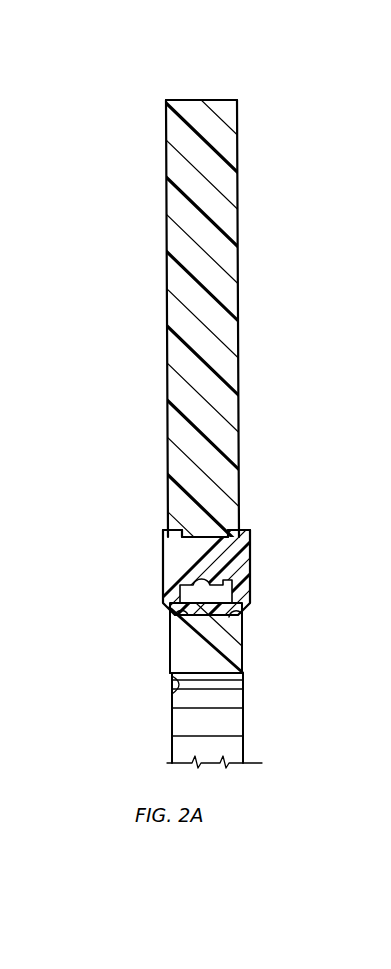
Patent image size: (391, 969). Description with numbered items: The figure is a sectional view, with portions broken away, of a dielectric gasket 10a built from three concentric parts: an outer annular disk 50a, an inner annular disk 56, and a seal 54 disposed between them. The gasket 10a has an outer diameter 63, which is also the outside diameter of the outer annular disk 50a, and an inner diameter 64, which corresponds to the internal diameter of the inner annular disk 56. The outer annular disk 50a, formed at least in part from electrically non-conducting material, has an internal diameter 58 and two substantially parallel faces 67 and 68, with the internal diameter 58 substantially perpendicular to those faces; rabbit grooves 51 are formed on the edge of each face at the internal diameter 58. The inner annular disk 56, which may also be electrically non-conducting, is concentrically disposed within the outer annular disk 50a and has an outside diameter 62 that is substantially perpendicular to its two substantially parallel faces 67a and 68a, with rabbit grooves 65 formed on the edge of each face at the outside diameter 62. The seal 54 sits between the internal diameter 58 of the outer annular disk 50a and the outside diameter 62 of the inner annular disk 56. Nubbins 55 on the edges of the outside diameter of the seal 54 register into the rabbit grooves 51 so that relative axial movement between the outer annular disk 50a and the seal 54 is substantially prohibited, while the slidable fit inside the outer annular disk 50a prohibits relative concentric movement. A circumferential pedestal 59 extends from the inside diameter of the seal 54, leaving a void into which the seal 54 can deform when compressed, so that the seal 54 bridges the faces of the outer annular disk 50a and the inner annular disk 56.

The dielectric gasket 10a is at (236, 62).
The outer annular disk 50a is at (166, 195).
The outer diameter 63 is at (197, 99).
The face 67 is at (166, 313).
The face 68 is at (240, 340).
The rabbit grooves 51 is at (175, 527).
The nubbins 55 is at (165, 532).
The internal diameter 58 is at (164, 548).
The seal 54 is at (247, 566).
The outside diameter 62 is at (180, 590).
The rabbit grooves 65 is at (170, 635).
The inner annular disk 56 is at (243, 650).
The pedestal 59 is at (170, 660).
The inner diameter 64 is at (172, 700).
The face 67a is at (168, 643).
The face 68a is at (244, 642).